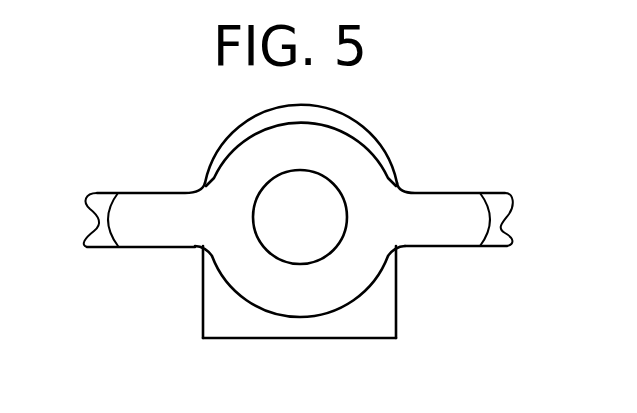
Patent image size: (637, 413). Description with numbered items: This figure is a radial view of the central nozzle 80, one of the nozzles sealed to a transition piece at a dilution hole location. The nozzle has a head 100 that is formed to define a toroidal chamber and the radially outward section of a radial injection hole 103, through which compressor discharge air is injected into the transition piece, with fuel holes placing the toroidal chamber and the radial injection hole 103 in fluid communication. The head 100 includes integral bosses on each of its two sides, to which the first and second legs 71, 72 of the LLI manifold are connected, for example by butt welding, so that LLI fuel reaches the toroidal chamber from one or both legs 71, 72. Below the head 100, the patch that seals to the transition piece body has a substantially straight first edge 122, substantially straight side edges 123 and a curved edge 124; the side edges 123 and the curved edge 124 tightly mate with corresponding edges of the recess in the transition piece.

The first leg 71 is at (508, 247).
The second leg 72 is at (102, 205).
The central nozzle 80 is at (420, 273).
The head 100 is at (457, 192).
The radial injection hole 103 is at (280, 218).
The first edge 122 is at (300, 338).
The side edges 123 is at (203, 293).
The curved edge 124 is at (355, 114).